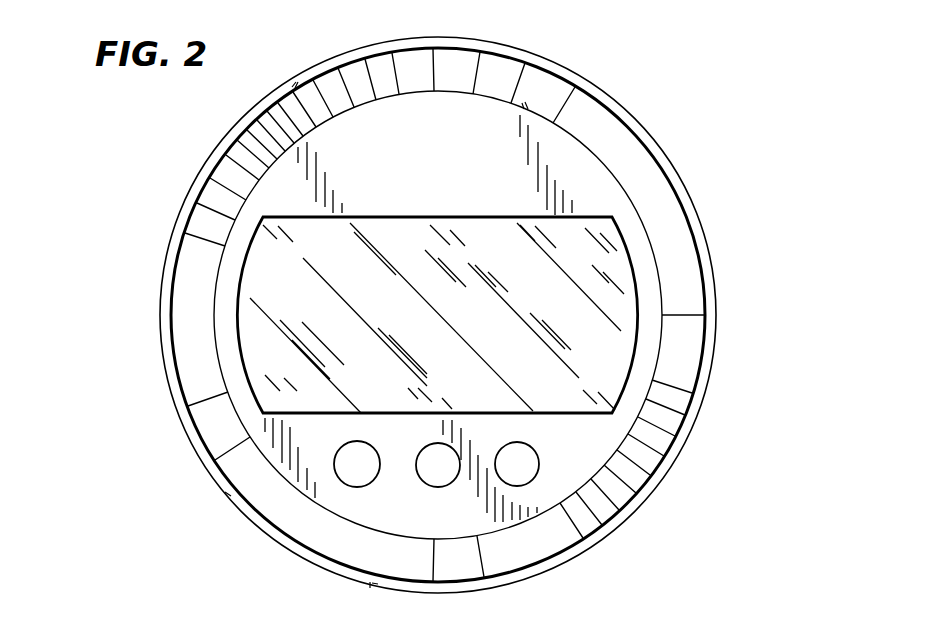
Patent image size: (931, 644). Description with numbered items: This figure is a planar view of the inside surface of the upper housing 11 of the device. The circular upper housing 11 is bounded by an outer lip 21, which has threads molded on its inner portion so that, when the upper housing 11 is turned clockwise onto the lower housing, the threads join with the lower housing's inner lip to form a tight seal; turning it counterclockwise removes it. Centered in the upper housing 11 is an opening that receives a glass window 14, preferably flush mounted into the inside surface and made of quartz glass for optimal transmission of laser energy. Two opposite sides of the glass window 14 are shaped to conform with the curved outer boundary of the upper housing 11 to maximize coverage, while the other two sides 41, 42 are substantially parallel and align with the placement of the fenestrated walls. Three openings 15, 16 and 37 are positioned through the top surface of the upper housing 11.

The upper housing 11 is at (170, 103).
The outer lip 21 is at (643, 128).
The side of glass window 42 is at (593, 414).
The glass window 14 is at (592, 280).
The side of glass window 41 is at (459, 217).
The opening 16 is at (358, 458).
The opening 37 is at (437, 470).
The opening 15 is at (515, 457).